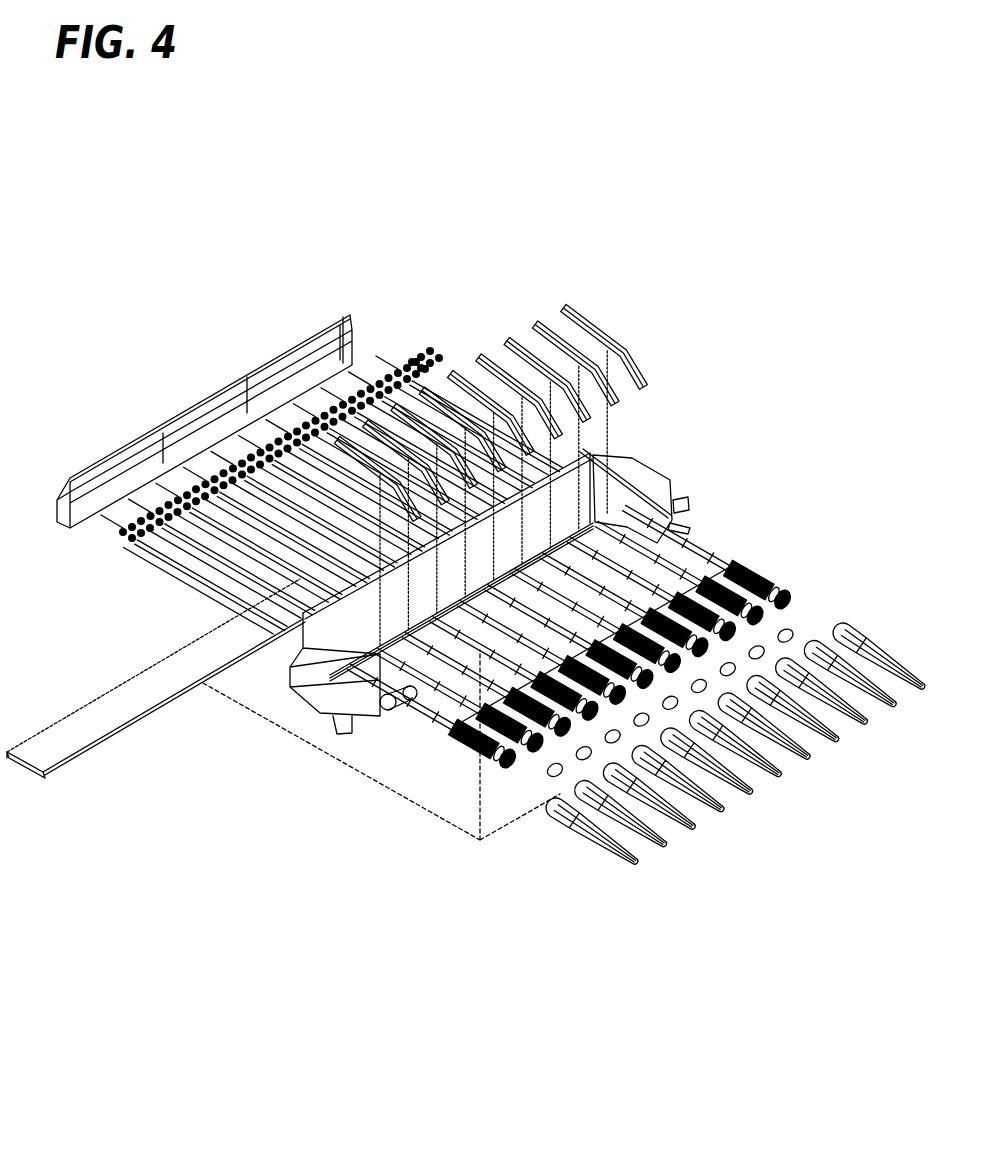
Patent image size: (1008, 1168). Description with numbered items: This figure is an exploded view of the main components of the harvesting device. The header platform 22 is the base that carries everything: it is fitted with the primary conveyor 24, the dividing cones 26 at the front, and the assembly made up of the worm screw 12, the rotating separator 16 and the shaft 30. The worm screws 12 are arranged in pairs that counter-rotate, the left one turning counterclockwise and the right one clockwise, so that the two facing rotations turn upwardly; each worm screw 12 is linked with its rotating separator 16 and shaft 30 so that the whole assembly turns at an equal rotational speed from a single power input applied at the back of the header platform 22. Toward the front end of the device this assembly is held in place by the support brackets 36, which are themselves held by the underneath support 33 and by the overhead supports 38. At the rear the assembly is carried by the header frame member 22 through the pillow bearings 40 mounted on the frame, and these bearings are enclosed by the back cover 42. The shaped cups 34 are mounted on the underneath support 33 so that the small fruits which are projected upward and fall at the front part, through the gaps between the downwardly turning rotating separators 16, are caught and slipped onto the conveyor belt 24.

The worm screw 12 is at (505, 775).
The rotating separator 16 is at (465, 737).
The header platform 22 is at (570, 495).
The primary conveyor 24 is at (77, 732).
The dividing cones 26 is at (588, 822).
The shaft 30 is at (692, 553).
The underneath support 33 is at (412, 708).
The shaped cups 34 is at (680, 527).
The support brackets 36 is at (545, 770).
The overhead supports 38 is at (587, 320).
The pillow bearings 40 is at (435, 352).
The back cover 42 is at (102, 457).